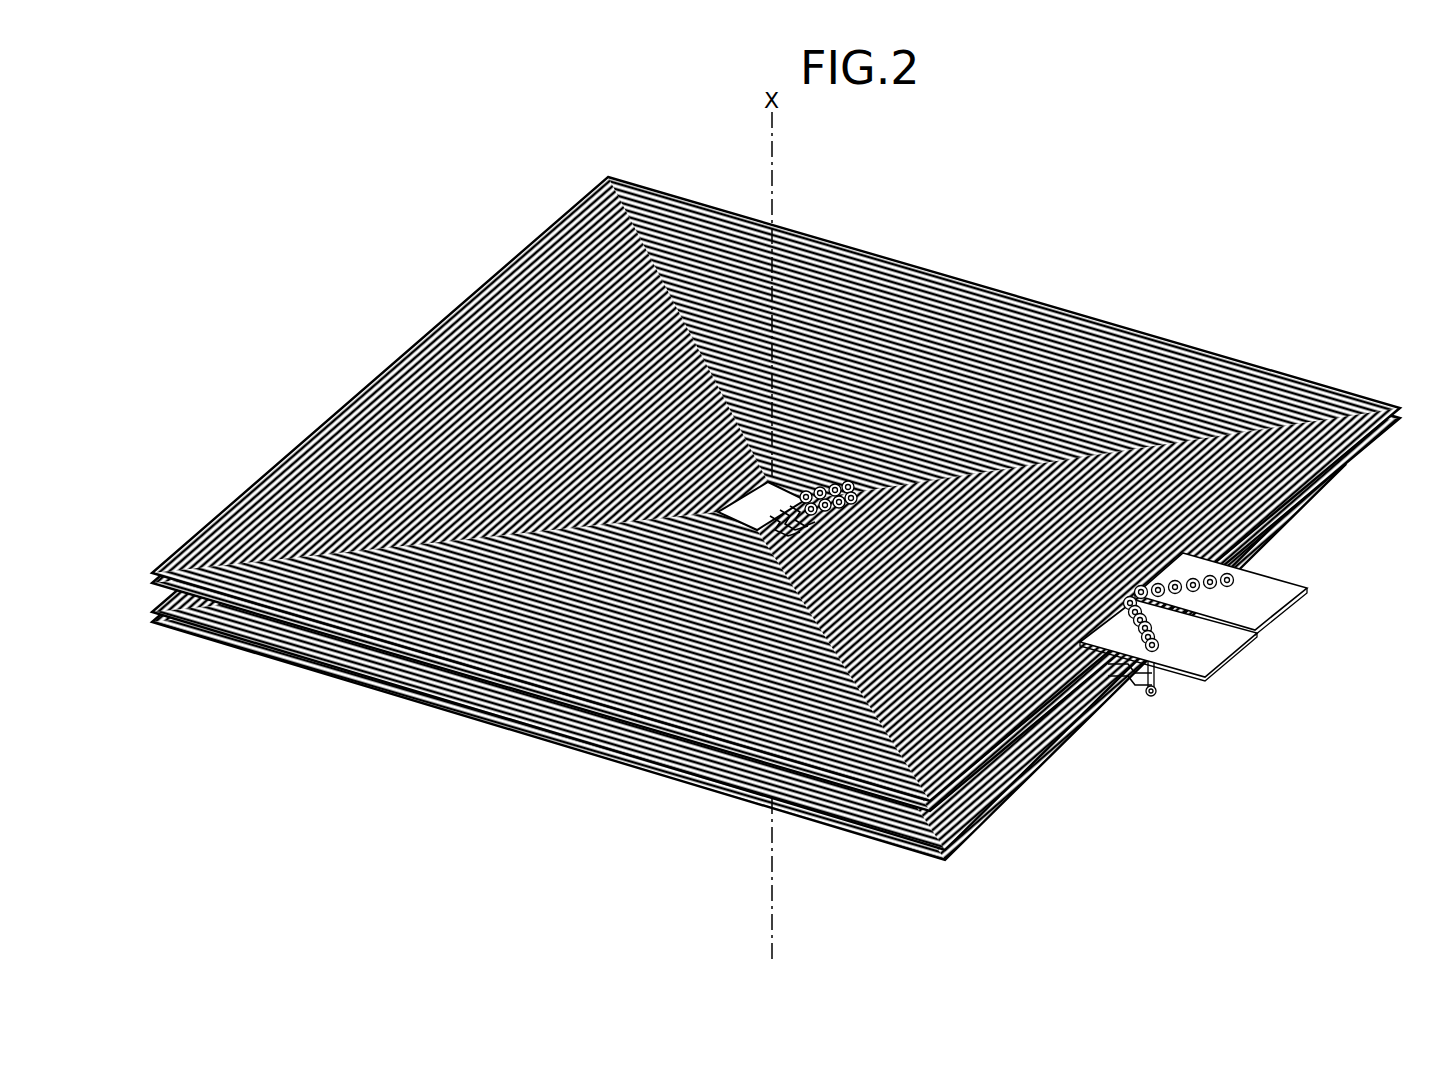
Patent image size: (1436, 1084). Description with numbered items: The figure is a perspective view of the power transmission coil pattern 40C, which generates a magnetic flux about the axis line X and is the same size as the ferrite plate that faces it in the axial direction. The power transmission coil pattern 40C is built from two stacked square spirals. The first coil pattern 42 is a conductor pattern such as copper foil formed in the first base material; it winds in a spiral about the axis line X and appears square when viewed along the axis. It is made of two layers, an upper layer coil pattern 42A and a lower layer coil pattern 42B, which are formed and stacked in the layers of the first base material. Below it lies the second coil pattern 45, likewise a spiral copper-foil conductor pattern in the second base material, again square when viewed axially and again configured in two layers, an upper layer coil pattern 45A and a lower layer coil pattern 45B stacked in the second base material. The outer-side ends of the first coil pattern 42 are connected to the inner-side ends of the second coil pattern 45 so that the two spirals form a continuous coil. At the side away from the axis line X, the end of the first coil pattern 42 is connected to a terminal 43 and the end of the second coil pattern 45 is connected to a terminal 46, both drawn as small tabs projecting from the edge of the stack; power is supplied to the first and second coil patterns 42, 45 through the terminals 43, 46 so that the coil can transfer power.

The power transmission coil pattern 40C is at (785, 518).
The first coil pattern 42 is at (785, 494).
The upper layer coil pattern 42A is at (1386, 436).
The lower layer coil pattern 42B is at (1336, 480).
The second coil pattern 45 is at (748, 539).
The upper layer coil pattern 45A is at (560, 745).
The lower layer coil pattern 45B is at (647, 766).
The terminal 43 is at (1276, 604).
The terminal 46 is at (1218, 652).